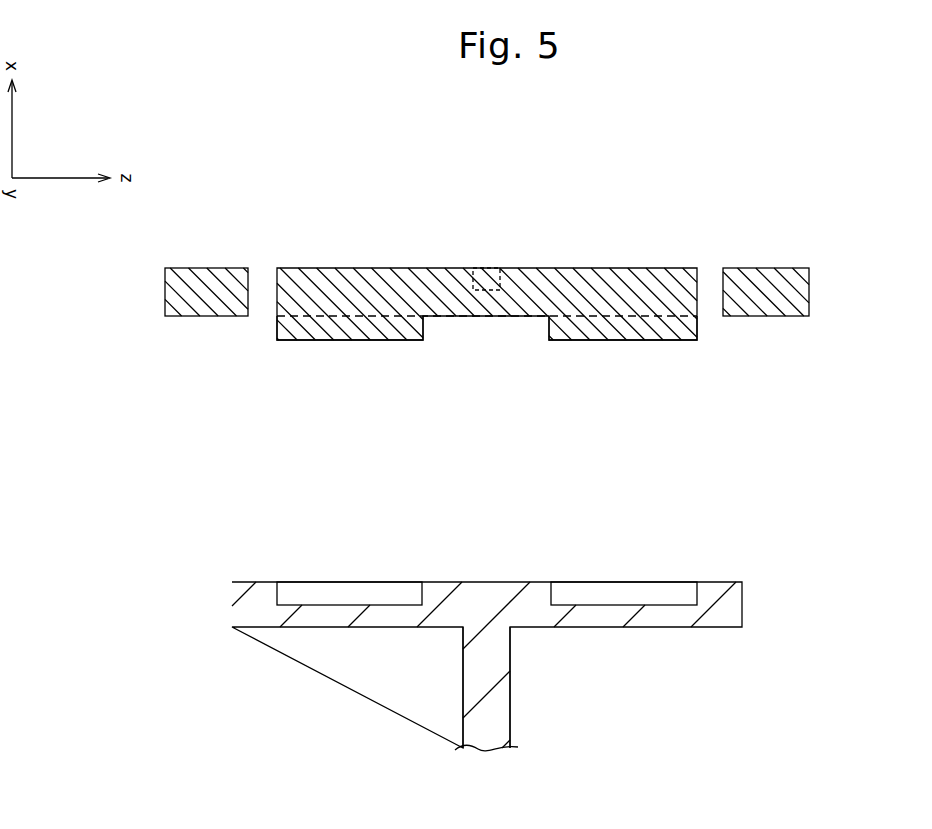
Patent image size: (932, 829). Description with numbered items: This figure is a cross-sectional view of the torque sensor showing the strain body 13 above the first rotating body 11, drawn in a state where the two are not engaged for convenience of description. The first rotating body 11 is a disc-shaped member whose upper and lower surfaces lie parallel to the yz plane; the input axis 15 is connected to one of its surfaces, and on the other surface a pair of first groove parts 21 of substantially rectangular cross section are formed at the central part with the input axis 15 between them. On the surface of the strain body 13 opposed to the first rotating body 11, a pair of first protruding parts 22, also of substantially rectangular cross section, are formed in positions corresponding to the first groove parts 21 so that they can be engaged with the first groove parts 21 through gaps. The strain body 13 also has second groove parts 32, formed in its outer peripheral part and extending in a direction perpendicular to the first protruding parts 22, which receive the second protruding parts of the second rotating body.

The first rotating body 11 is at (813, 650).
The strain body 13 is at (880, 340).
The input axis 15 is at (475, 693).
The first groove parts 21 is at (612, 605).
The first protruding parts 22 is at (626, 377).
The second groove parts 32 is at (513, 245).